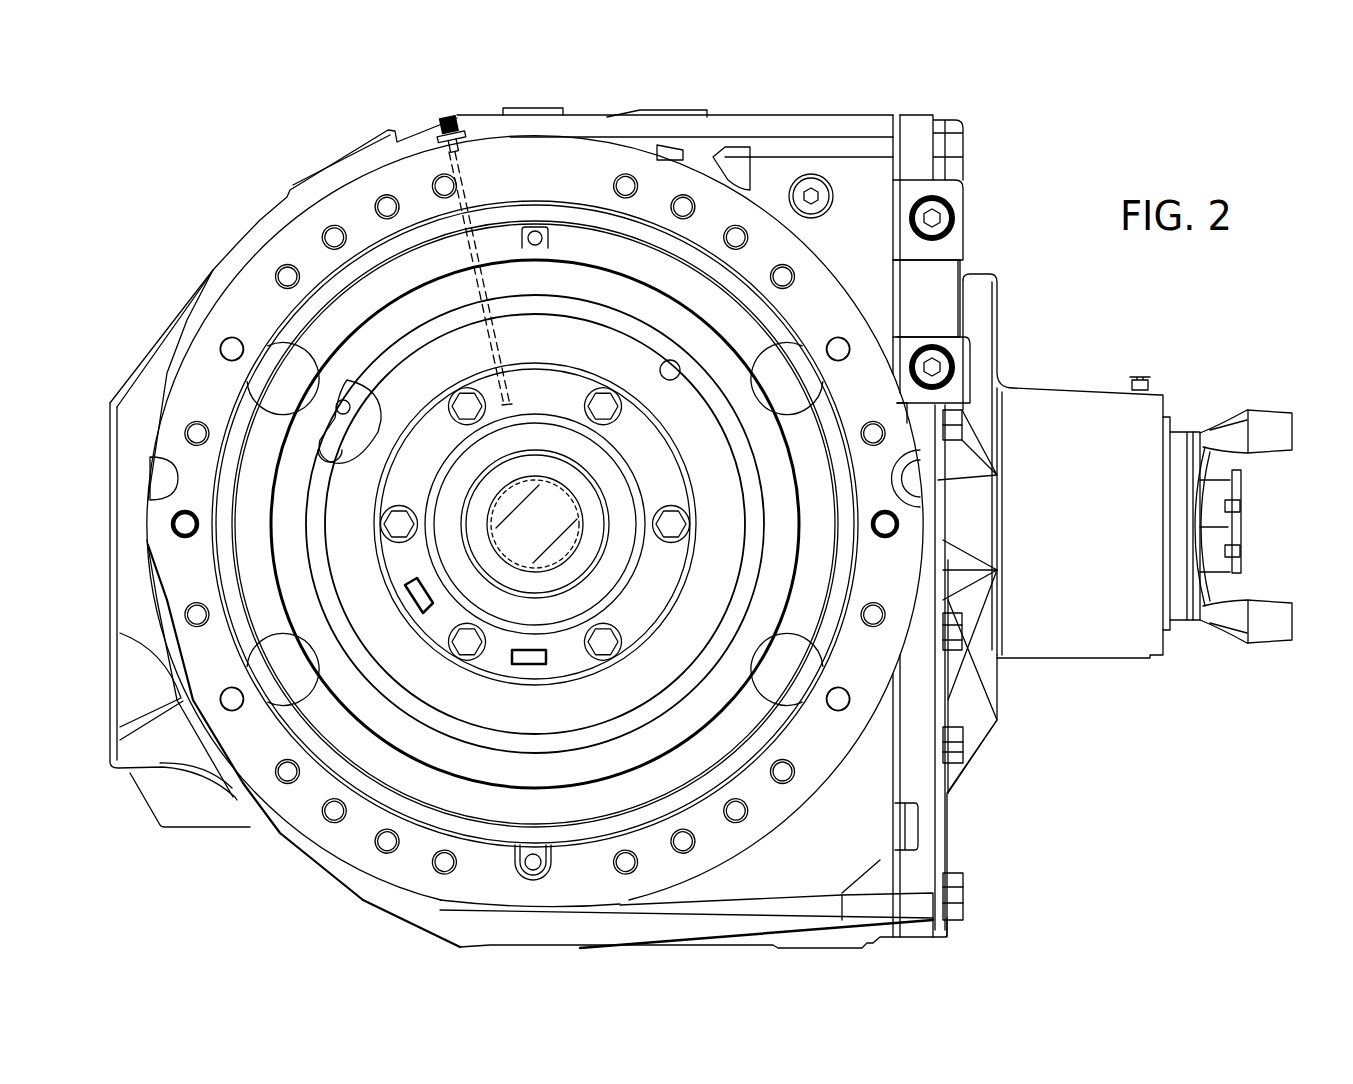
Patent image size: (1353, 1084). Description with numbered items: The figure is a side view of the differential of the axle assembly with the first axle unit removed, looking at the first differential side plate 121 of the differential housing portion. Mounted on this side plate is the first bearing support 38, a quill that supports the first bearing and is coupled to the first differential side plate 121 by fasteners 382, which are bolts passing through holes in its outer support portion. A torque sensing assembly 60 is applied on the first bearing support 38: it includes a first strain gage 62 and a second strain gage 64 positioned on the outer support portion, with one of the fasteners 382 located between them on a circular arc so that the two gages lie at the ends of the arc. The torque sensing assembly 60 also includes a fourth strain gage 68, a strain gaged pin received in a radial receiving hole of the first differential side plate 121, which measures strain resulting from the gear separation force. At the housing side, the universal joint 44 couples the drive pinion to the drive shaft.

The first bearing support 38 is at (665, 604).
The fasteners 382 is at (675, 526).
The first differential side plate 121 is at (455, 312).
The torque sensing assembly 60 is at (439, 656).
The first strain gage 62 is at (529, 665).
The second strain gage 64 is at (413, 600).
The fourth strain gage 68 is at (448, 103).
The universal joint 44 is at (1188, 642).